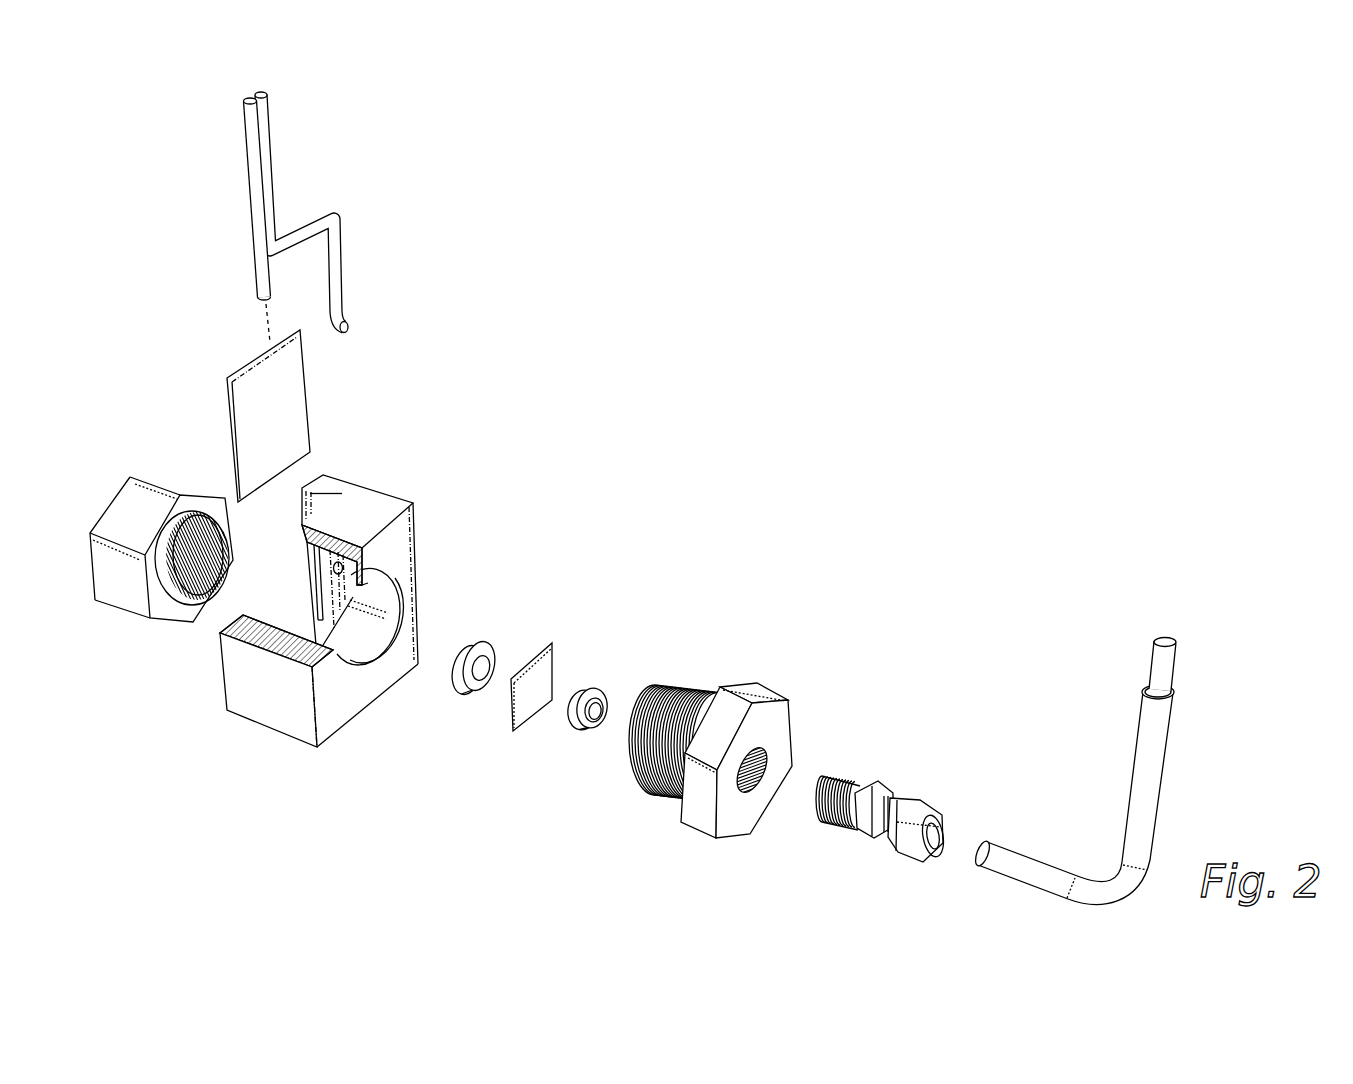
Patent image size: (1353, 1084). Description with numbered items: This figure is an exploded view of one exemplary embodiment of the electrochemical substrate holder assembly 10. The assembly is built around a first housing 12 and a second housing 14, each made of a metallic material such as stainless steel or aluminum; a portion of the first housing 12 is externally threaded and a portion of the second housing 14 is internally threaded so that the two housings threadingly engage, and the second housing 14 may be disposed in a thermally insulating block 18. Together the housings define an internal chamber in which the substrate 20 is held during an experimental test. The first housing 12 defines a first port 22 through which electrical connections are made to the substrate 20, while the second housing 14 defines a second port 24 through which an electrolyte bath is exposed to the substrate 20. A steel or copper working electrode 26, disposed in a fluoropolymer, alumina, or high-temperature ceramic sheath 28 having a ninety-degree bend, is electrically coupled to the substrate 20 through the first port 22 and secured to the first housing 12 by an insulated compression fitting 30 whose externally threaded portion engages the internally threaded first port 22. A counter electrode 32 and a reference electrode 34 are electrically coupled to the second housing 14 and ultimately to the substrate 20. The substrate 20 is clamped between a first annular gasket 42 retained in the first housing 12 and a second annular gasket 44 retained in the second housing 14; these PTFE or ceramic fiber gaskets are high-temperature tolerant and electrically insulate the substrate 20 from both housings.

The electrochemical substrate holder assembly 10 is at (757, 560).
The first housing 12 is at (699, 822).
The second housing 14 is at (118, 595).
The thermally insulating block 18 is at (267, 711).
The substrate 20 is at (527, 712).
The first port 22 is at (766, 803).
The second port 24 is at (267, 568).
The working electrode 26 is at (1155, 670).
The electrode sheath 28 is at (1133, 793).
The insulated compression fitting 30 is at (908, 793).
The counter electrode 32 is at (253, 178).
The reference electrode 34 is at (339, 272).
The first annular gasket 42 is at (590, 684).
The second annular gasket 44 is at (469, 641).